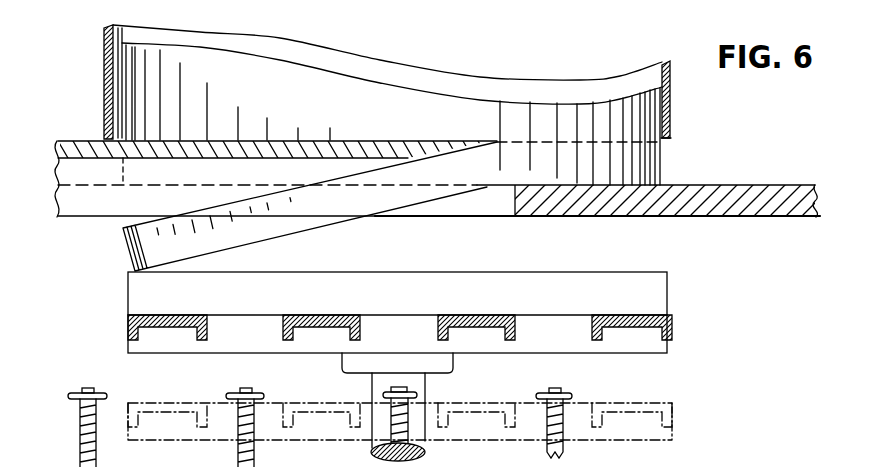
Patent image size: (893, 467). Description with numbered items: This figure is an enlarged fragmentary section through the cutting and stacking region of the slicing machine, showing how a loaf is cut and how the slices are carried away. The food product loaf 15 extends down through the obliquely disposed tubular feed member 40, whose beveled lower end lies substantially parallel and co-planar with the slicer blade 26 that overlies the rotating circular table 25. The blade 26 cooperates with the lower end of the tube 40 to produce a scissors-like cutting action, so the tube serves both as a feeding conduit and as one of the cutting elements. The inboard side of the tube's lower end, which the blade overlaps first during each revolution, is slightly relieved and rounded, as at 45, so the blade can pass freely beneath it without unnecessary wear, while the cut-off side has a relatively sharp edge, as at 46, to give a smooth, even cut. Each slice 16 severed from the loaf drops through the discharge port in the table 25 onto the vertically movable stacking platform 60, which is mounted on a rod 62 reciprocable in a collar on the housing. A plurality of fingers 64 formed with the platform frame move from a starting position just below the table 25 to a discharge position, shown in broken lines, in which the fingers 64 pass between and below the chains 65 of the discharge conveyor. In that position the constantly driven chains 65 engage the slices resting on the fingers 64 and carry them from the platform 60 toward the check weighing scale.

The food product loaf 15 is at (470, 100).
The slice 16 is at (125, 254).
The circular table 25 is at (705, 216).
The slicer blade 26 is at (80, 142).
The tubular feed member 40 is at (671, 108).
The relieved and rounded inboard side 45 is at (104, 136).
The sharp edge 46 is at (668, 139).
The stacking platform 60 is at (682, 317).
The rod 62 is at (428, 441).
The fingers 64 is at (290, 316).
The chains 65 is at (104, 395).